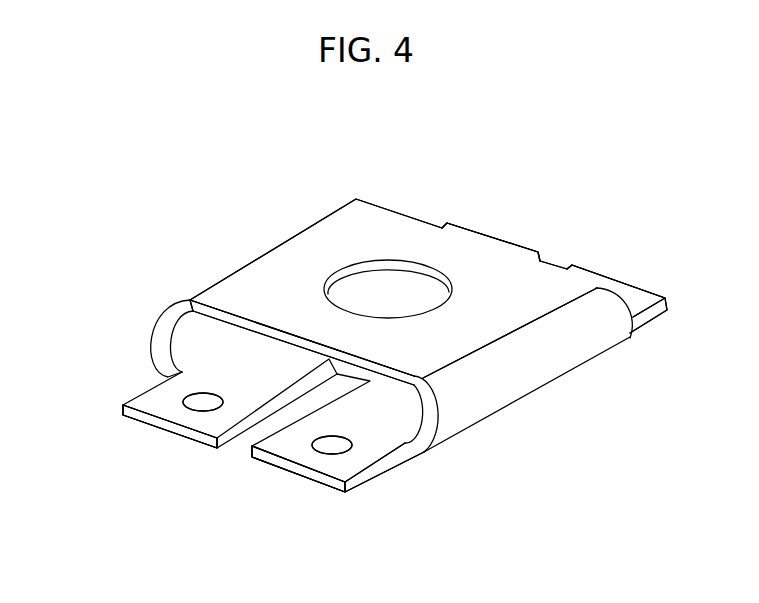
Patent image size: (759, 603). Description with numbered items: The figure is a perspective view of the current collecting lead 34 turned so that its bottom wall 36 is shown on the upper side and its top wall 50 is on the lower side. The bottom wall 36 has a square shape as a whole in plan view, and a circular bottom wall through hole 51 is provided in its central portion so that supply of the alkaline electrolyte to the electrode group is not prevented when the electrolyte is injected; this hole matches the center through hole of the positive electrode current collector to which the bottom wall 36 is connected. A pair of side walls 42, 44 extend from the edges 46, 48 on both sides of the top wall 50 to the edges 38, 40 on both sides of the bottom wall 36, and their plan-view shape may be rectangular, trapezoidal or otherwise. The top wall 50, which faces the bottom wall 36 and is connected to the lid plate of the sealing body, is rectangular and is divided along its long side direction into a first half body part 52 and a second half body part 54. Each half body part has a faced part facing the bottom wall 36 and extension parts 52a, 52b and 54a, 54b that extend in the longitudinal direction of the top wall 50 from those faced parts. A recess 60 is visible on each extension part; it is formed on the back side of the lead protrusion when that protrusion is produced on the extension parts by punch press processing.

The current collecting lead 34 is at (440, 173).
The bottom wall 36 is at (311, 241).
The edge 38 is at (258, 252).
The edge 40 is at (497, 344).
The side wall 42 is at (157, 338).
The side wall 44 is at (550, 366).
The edge 46 is at (170, 379).
The edge 48 is at (480, 424).
The top wall 50 is at (236, 543).
The bottom wall through hole 51 is at (432, 276).
The first half body part 52 is at (282, 466).
The extension part 52a is at (375, 452).
The extension part 52b is at (634, 299).
The second half body part 54 is at (193, 435).
The extension part 54a is at (152, 400).
The extension part 54b is at (498, 244).
The recess 60 is at (200, 398).